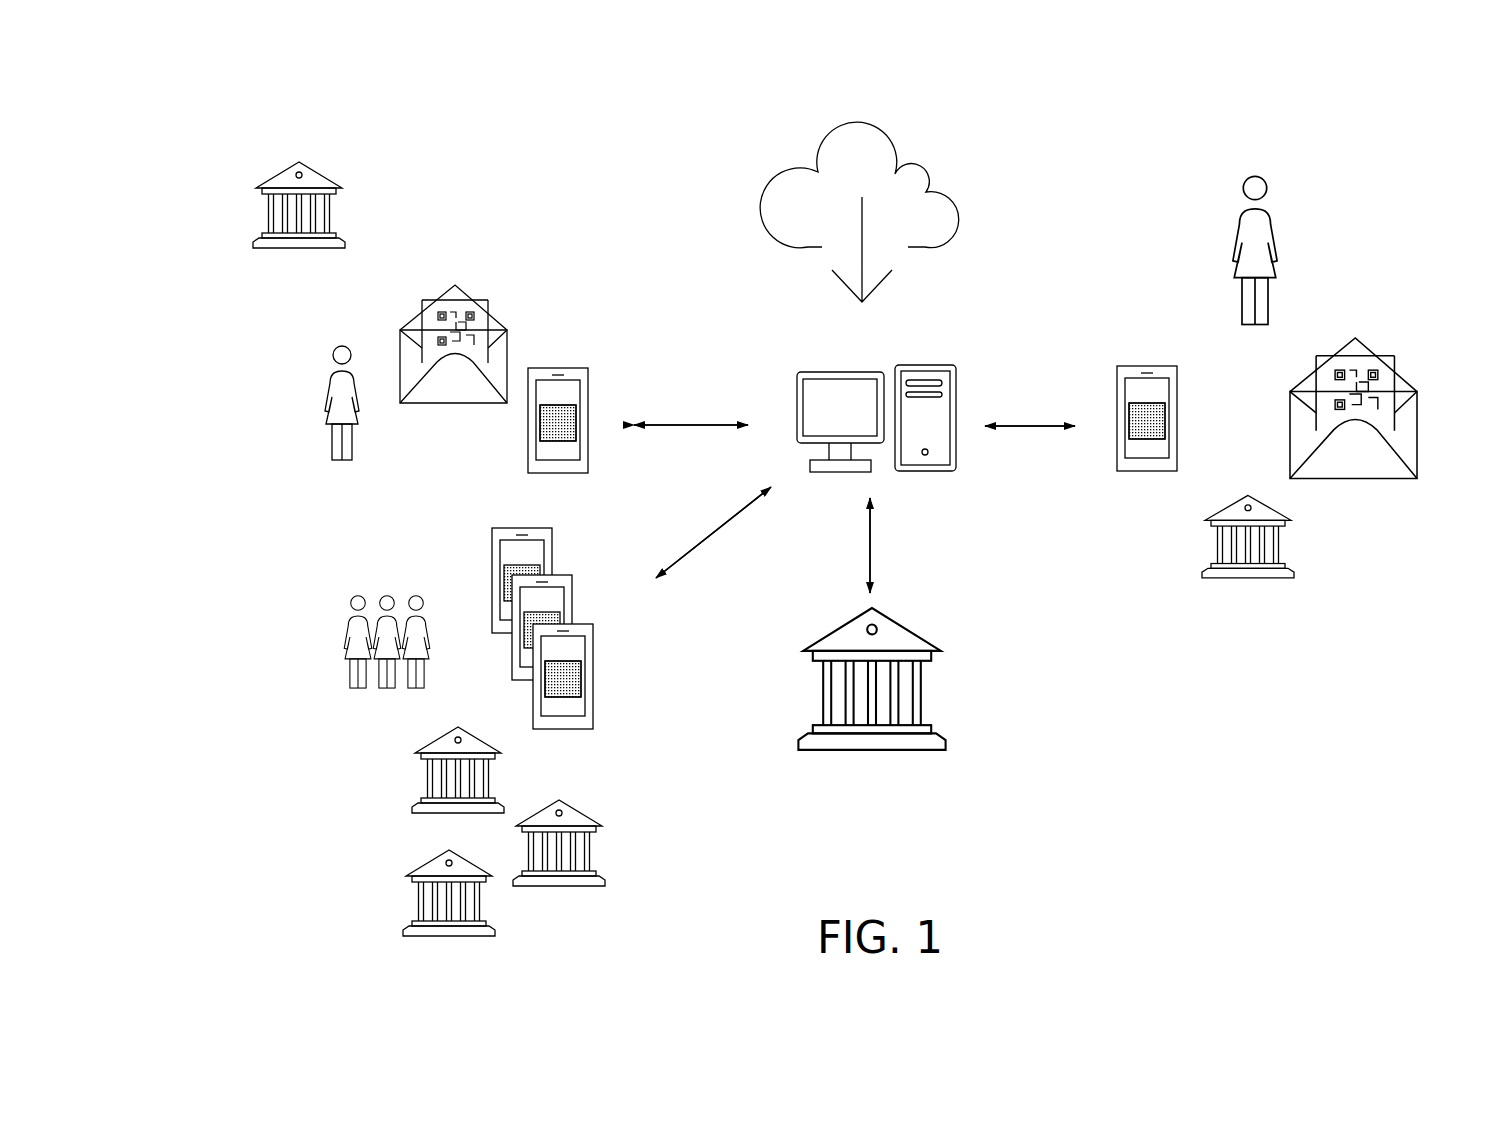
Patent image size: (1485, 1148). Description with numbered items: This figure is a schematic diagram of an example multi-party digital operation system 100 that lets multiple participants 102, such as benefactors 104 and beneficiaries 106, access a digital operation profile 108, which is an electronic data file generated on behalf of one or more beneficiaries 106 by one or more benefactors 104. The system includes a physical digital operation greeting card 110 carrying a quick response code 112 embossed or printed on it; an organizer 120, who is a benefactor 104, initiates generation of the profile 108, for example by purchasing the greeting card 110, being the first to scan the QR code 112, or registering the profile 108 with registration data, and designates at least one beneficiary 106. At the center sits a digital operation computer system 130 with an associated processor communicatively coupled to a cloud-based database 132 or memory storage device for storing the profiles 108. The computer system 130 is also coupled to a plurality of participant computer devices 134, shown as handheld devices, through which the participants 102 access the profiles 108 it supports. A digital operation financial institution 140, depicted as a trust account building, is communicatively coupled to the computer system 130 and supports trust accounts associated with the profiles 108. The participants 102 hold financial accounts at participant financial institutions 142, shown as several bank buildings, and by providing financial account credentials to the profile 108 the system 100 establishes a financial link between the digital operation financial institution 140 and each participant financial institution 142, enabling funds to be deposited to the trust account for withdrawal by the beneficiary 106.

The digital operation system 100 is at (875, 106).
The participants 102 is at (1403, 165).
The benefactors 104 is at (333, 606).
The beneficiary 106 is at (1232, 218).
The digital operation profile 108 is at (570, 406).
The digital operation greeting card 110 is at (427, 310).
The quick response code 112 is at (477, 303).
The organizer 120 is at (326, 376).
The digital operation computer system 130 is at (831, 372).
The database 132 is at (920, 175).
The participant computer devices 134 is at (568, 368).
The digital operation financial institution 140 is at (905, 632).
The participant financial institution 142 is at (319, 174).